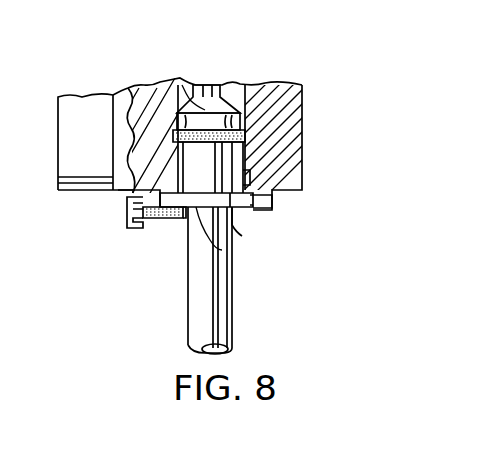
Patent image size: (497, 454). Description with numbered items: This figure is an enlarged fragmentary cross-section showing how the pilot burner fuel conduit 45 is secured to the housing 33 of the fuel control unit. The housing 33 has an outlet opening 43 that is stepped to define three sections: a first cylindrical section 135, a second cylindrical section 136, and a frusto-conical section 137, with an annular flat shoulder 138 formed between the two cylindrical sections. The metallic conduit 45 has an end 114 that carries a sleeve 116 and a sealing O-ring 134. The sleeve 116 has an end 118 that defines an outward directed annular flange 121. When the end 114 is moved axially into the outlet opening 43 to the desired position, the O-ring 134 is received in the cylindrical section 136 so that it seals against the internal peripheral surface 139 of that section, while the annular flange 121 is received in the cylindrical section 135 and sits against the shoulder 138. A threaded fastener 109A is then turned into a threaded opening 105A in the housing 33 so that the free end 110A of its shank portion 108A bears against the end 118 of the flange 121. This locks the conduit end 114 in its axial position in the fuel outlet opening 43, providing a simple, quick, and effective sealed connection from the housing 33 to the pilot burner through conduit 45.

The housing 33 is at (303, 86).
The frusto-conical section 137 is at (237, 87).
The internal peripheral surface 139 is at (183, 85).
The sealing O-ring 134 is at (252, 113).
The cylindrical section 136 is at (252, 145).
The sleeve 116 is at (250, 165).
The outlet opening 43 is at (253, 178).
The annular flat shoulder 138 is at (150, 195).
The shank portion 108A is at (143, 195).
The annular flange 121 is at (274, 203).
The cylindrical section 135 is at (242, 217).
The threaded fastener 109A is at (127, 225).
The threaded opening 105A is at (160, 220).
The free end 110A is at (187, 252).
The end of sleeve 118 is at (222, 245).
The conduit end 114 is at (230, 267).
The pilot fuel conduit 45 is at (233, 323).